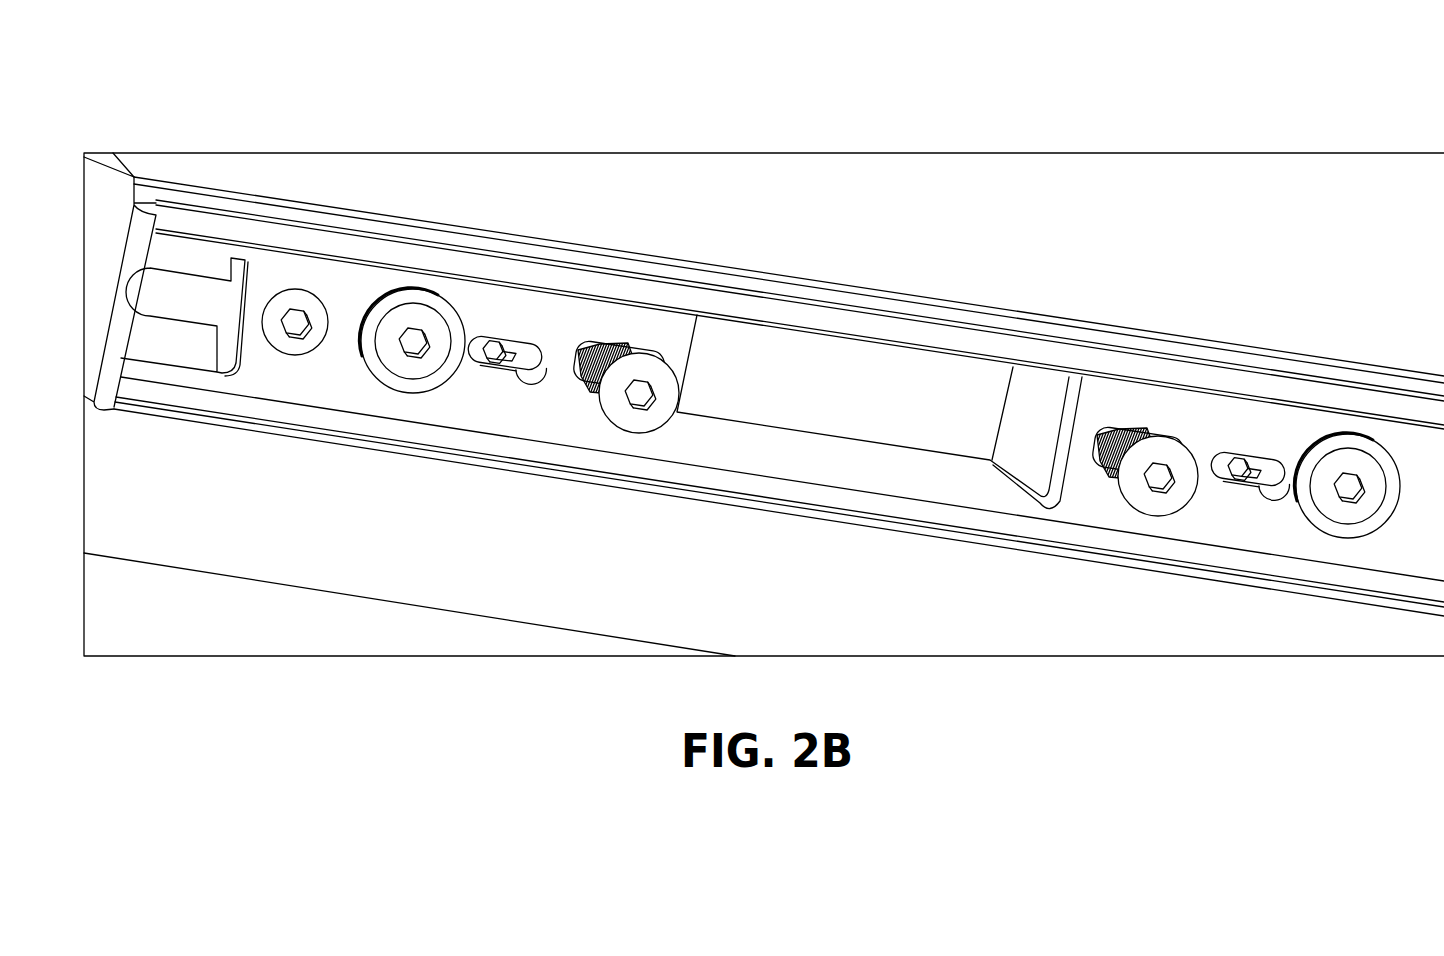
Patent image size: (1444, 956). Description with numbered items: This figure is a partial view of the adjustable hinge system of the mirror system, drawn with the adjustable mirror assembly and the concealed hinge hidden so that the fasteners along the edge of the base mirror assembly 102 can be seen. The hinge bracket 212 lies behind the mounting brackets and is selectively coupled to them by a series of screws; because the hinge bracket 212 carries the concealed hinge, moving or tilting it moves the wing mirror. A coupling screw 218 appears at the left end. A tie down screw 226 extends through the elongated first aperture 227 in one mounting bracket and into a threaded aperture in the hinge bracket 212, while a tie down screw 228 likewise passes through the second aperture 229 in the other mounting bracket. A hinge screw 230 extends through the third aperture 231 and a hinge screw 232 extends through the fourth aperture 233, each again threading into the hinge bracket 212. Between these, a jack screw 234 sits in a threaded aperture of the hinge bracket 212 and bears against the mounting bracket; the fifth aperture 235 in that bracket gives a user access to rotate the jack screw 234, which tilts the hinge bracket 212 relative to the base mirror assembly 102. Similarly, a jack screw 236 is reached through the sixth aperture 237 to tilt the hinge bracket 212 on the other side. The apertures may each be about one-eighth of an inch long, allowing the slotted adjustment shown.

The base mirror assembly 102 is at (194, 84).
The hinge bracket 212 is at (917, 360).
The coupling screw 218 is at (275, 297).
The tie down screw 226 is at (418, 310).
The first aperture 227 is at (373, 303).
The tie down screw 228 is at (1343, 462).
The second aperture 229 is at (1399, 466).
The hinge screw 230 is at (607, 347).
The third aperture 231 is at (648, 352).
The hinge screw 232 is at (1134, 436).
The fourth aperture 233 is at (1101, 433).
The jack screw 234 is at (481, 343).
The fifth aperture 235 is at (540, 345).
The jack screw 236 is at (1225, 460).
The sixth aperture 237 is at (1283, 452).